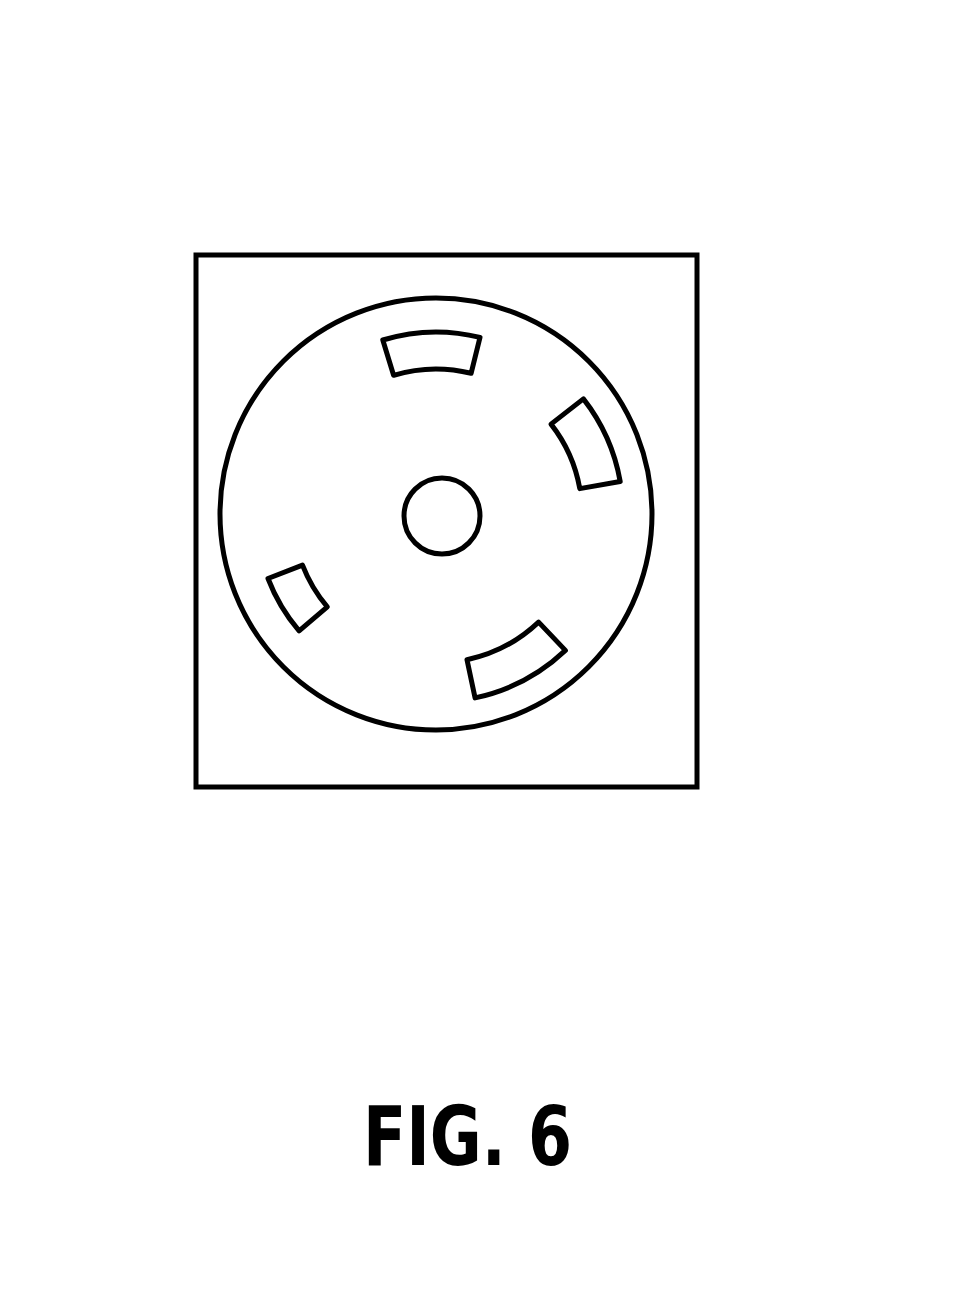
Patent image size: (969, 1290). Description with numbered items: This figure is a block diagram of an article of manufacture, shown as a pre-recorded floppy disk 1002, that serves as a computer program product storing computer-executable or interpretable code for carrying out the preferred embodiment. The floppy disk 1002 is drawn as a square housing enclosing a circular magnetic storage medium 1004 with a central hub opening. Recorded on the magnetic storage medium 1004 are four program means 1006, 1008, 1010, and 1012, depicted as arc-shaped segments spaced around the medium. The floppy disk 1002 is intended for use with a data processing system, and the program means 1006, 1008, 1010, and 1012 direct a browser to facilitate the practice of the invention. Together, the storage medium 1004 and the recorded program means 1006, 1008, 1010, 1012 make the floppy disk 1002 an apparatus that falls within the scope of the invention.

The pre-recorded floppy disk 1002 is at (506, 150).
The magnetic storage medium 1004 is at (575, 543).
The program means 1006 is at (598, 448).
The program means 1008 is at (458, 345).
The program means 1010 is at (290, 593).
The program means 1012 is at (503, 677).